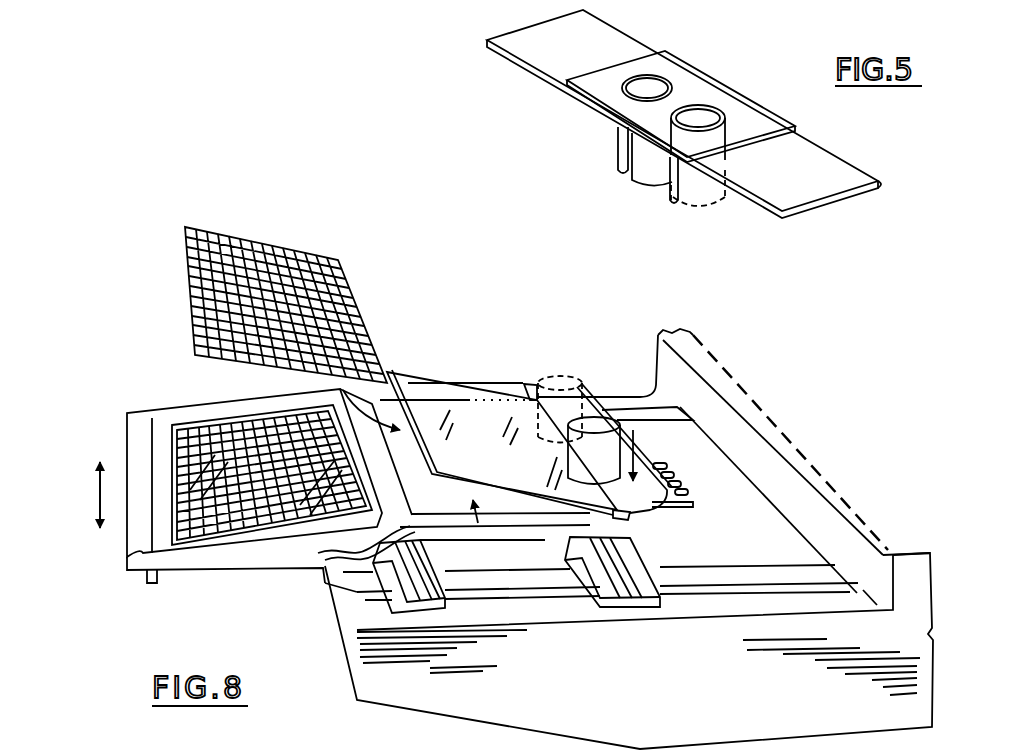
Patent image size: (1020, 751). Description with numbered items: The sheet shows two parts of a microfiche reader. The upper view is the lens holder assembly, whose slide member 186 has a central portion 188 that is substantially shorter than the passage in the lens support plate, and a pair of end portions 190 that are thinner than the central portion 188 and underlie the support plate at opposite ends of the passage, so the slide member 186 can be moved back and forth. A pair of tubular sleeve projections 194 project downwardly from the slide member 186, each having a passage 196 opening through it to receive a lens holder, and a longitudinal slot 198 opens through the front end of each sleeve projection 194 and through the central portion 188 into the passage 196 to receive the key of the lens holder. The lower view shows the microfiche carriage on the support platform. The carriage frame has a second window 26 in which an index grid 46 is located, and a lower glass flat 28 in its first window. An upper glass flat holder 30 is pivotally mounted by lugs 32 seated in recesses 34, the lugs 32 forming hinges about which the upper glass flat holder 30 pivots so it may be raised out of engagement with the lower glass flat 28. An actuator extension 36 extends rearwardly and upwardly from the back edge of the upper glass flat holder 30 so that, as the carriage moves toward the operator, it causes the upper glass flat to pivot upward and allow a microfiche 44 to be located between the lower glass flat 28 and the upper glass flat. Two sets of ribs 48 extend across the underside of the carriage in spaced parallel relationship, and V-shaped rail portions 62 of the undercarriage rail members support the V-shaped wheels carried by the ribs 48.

In FIG. 5, the slide member 186 is at (628, 33).
In FIG. 5, the central portion 188 is at (735, 105).
In FIG. 5, the end portions 190 is at (540, 57).
In FIG. 5, the tubular sleeve projections 194 is at (648, 170).
In FIG. 5, the passages 196 is at (660, 85).
In FIG. 5, the longitudinal slot 198 is at (618, 142).
In FIG. 8, the second window 26 is at (240, 410).
In FIG. 8, the lower glass flat 28 is at (440, 497).
In FIG. 8, the upper glass flat holder 30 is at (453, 383).
In FIG. 8, the lugs 32 is at (527, 383).
In FIG. 8, the recesses 34 is at (462, 553).
In FIG. 8, the actuator extension 36 is at (652, 513).
In FIG. 8, the microfiche 44 is at (315, 262).
In FIG. 8, the index grid 46 is at (197, 407).
In FIG. 8, the ribs 48 is at (350, 548).
In FIG. 8, the V-shaped rail portion 62 is at (422, 607).